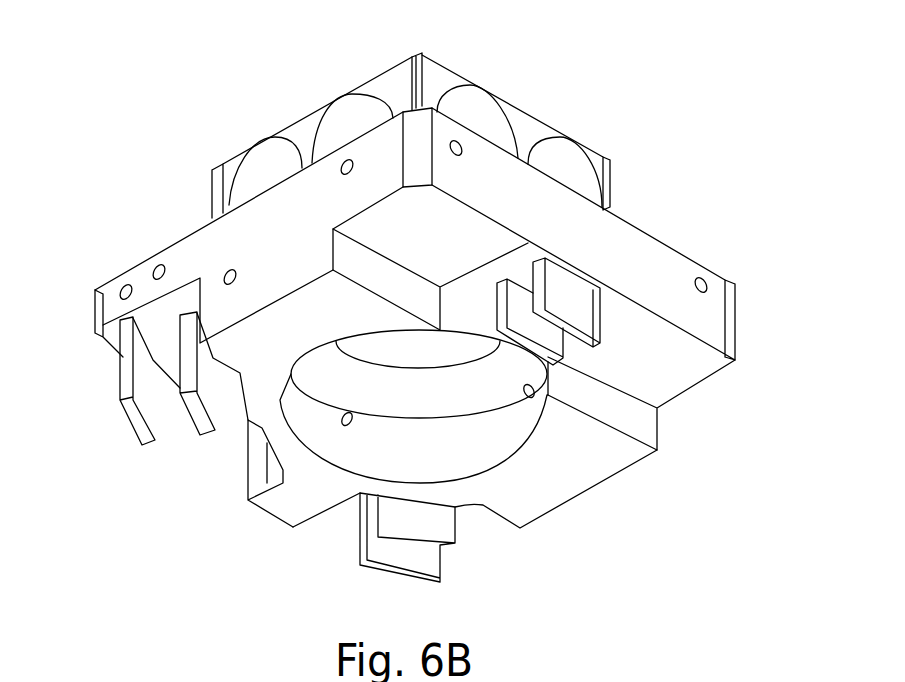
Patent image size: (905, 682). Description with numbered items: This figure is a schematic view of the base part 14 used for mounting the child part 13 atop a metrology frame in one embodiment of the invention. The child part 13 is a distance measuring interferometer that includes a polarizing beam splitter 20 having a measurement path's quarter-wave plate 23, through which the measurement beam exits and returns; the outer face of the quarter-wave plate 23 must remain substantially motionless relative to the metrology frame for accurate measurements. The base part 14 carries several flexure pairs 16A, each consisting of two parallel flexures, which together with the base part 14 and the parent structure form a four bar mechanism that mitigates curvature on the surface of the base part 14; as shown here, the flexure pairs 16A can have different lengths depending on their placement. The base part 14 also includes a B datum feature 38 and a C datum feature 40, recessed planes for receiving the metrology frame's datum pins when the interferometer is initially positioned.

The child part 13 is at (522, 72).
The base part 14 is at (665, 277).
The flexure pair 16A is at (611, 346).
The polarizing beam splitter 20 is at (422, 67).
The quarter-wave plate 23 is at (543, 157).
The B datum feature 38 is at (642, 420).
The C datum feature 40 is at (257, 475).